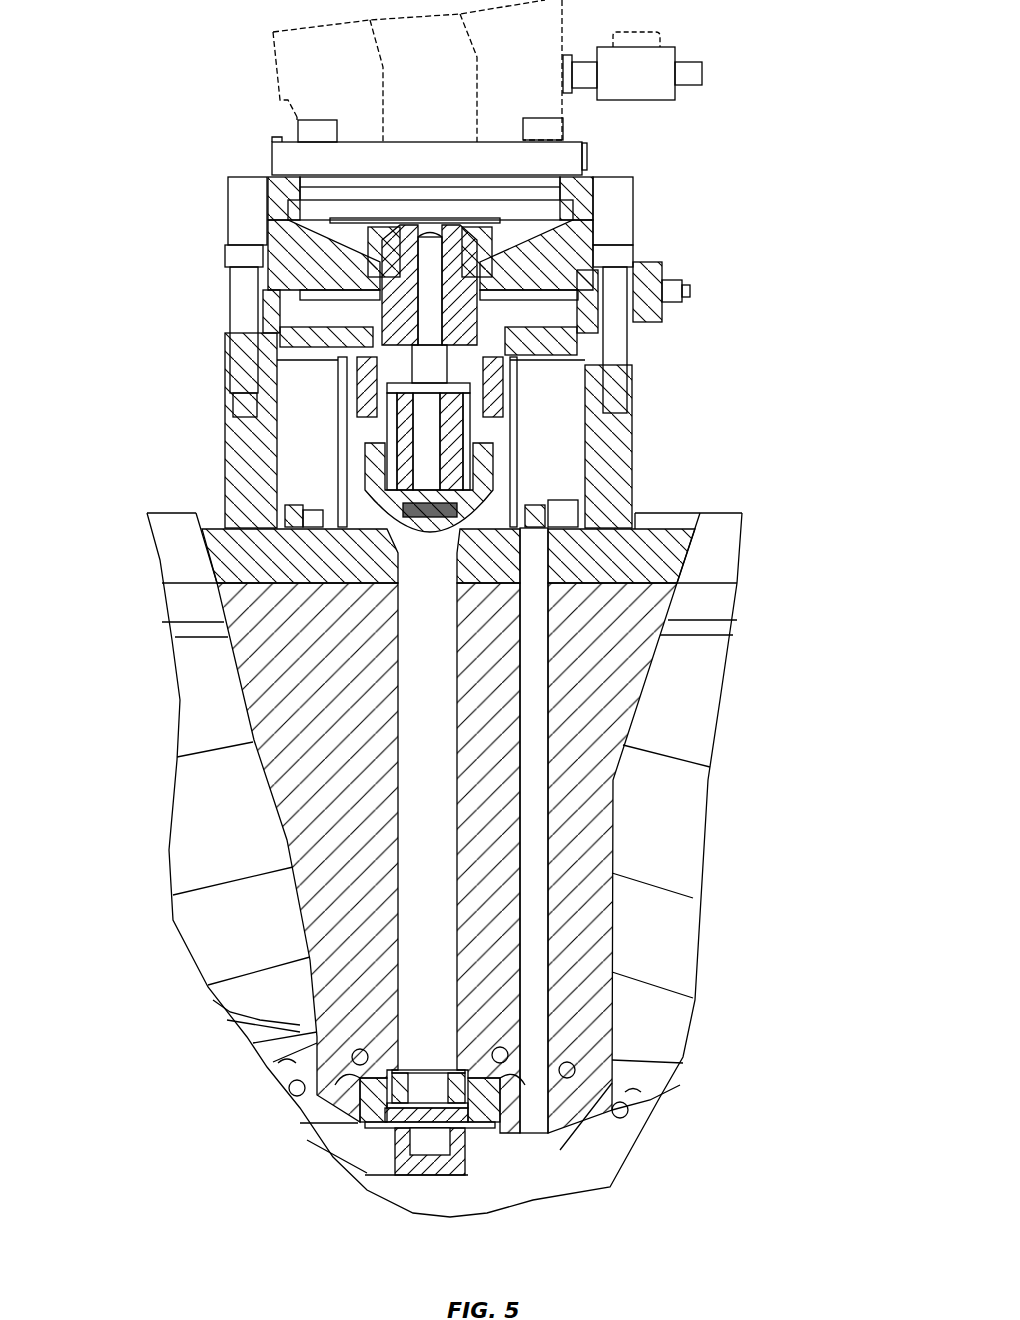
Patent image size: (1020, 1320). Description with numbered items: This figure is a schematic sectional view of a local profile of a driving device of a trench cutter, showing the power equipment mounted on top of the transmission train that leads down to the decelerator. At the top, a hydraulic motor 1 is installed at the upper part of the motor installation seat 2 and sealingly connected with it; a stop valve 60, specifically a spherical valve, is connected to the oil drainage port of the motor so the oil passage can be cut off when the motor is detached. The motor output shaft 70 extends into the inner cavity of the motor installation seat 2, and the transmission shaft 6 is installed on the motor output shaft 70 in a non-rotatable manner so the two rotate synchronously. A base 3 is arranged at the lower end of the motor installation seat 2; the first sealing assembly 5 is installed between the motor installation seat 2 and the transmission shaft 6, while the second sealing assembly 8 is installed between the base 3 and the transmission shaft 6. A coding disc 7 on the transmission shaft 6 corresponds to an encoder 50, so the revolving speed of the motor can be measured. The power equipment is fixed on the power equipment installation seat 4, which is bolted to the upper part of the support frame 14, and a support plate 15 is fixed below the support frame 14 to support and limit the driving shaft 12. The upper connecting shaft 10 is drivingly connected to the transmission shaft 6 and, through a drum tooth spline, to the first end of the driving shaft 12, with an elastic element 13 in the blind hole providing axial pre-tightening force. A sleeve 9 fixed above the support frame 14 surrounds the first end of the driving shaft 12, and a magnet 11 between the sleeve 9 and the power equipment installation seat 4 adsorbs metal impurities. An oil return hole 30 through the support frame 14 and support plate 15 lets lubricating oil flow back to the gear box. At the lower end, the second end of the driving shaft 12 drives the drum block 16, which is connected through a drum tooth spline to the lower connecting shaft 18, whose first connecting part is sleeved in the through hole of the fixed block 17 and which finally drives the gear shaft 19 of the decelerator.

The motor 1 is at (300, 157).
The motor installation seat 2 is at (385, 270).
The base 3 is at (260, 353).
The power equipment installation seat 4 is at (243, 430).
The first sealing assembly 5 is at (500, 218).
The transmission shaft 6 is at (395, 325).
The coding disc 7 is at (500, 268).
The second sealing assembly 8 is at (500, 392).
The sleeve 9 is at (345, 470).
The upper connecting shaft 10 is at (490, 436).
The magnet 11 is at (290, 515).
The driving shaft 12 is at (500, 480).
The elastic element 13 is at (580, 494).
The support frame 14 is at (647, 567).
The support plate 15 is at (600, 695).
The drum block 16 is at (495, 1065).
The fixed block 17 is at (505, 1100).
The lower connecting shaft 18 is at (470, 1127).
The gear shaft 19 is at (455, 1160).
The oil return hole 30 is at (527, 830).
The encoder 50 is at (600, 285).
The stop valve 60 is at (628, 80).
The motor output shaft 70 is at (430, 238).